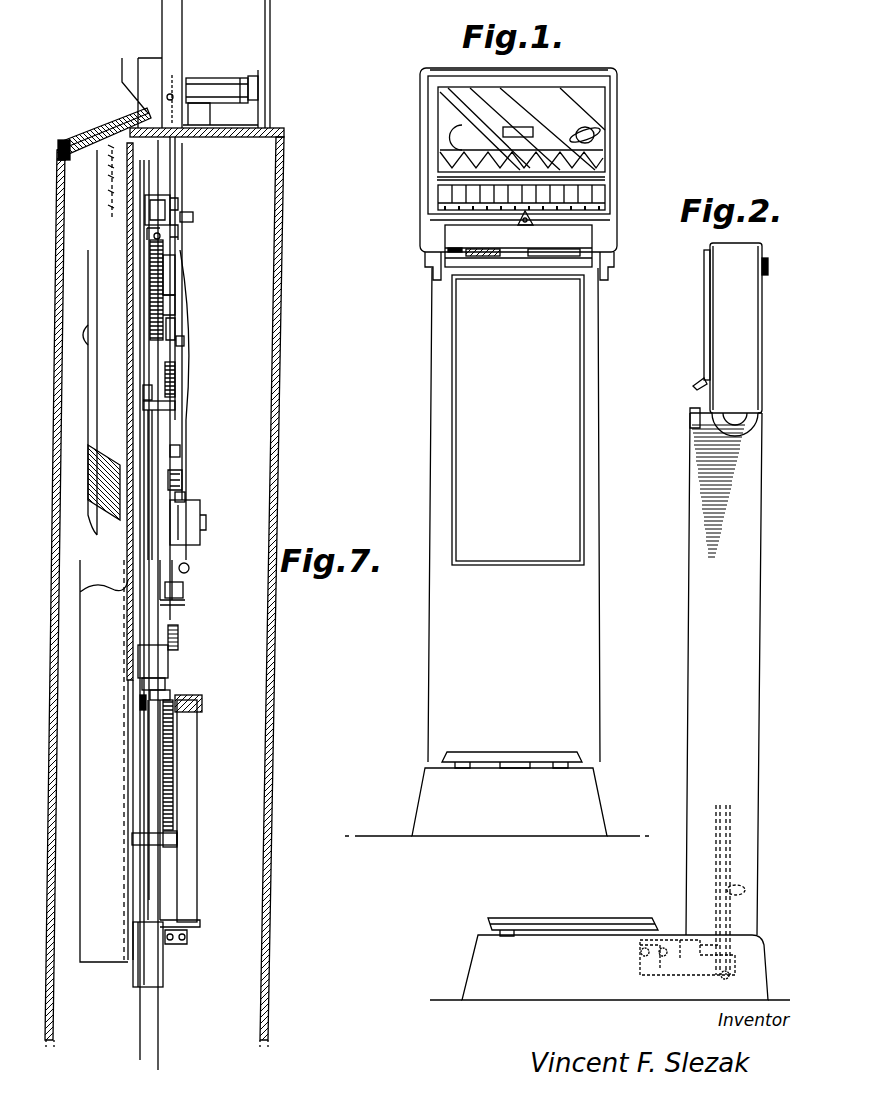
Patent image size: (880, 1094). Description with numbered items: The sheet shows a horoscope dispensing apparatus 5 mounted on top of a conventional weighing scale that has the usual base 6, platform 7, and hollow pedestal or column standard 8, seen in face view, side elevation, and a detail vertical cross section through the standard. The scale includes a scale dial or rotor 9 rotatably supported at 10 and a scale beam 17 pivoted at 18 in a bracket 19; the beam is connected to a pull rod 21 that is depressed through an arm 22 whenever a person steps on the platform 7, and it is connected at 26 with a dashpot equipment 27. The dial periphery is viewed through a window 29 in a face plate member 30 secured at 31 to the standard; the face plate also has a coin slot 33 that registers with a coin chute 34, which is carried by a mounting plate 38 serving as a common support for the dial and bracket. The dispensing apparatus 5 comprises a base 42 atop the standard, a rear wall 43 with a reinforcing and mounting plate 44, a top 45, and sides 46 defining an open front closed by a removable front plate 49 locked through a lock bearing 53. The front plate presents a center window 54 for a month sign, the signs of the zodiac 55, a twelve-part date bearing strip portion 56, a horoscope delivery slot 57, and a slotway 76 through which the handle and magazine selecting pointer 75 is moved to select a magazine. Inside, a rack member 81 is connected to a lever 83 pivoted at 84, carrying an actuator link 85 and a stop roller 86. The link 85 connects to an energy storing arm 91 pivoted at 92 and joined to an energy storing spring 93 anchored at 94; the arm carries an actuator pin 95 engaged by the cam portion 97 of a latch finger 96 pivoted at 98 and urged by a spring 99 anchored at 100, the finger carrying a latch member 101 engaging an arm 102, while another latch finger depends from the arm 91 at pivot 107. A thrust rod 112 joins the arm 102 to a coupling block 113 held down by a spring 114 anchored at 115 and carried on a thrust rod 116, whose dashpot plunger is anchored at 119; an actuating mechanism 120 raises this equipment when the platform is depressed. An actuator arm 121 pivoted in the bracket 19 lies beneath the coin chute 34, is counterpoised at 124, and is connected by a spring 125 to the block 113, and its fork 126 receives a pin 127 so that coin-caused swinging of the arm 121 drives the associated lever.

In FIG. 1, the horoscope dispensing apparatus 5 is at (632, 143).
In FIG. 2, the horoscope dispensing apparatus 5 is at (771, 337).
In FIG. 1, the base 6 is at (497, 802).
In FIG. 2, the base 6 is at (610, 967).
In FIG. 1, the platform 7 is at (542, 760).
In FIG. 2, the platform 7 is at (562, 918).
In FIG. 7, the pedestal or column standard 8 is at (279, 692).
In FIG. 1, the pedestal or column standard 8 is at (606, 489).
In FIG. 2, the pedestal or column standard 8 is at (763, 824).
In FIG. 7, the scale dial or rotor 9 is at (97, 216).
In FIG. 7, the rotatable support 10 is at (84, 338).
In FIG. 7, the scale beam 17 is at (175, 568).
In FIG. 7, the pivot 18 is at (190, 568).
In FIG. 7, the bracket 19 is at (180, 590).
In FIG. 2, the pull rod 21 is at (724, 898).
In FIG. 2, the arm 22 is at (635, 985).
In FIG. 7, the dashpot connection 26 is at (172, 688).
In FIG. 7, the dashpot equipment 27 is at (185, 875).
In FIG. 7, the window 29 is at (93, 116).
In FIG. 1, the window 29 is at (545, 262).
In FIG. 7, the face plate member 30 is at (72, 142).
In FIG. 1, the face plate member 30 is at (468, 264).
In FIG. 2, the face plate member 30 is at (690, 410).
In FIG. 7, the securing means 31 is at (60, 150).
In FIG. 1, the coin slot 33 is at (446, 252).
In FIG. 7, the coin chute 34 is at (178, 150).
In FIG. 7, the mounting plate 38 is at (160, 172).
In FIG. 7, the base 42 is at (262, 126).
In FIG. 7, the rear wall 43 is at (278, 55).
In FIG. 7, the reinforcing and mounting plate 44 is at (276, 23).
In FIG. 1, the top 45 is at (580, 70).
In FIG. 1, the sides 46 is at (617, 112).
In FIG. 2, the sides 46 is at (745, 306).
In FIG. 1, the removable front plate 49 is at (600, 82).
In FIG. 2, the removable front plate 49 is at (704, 323).
In FIG. 2, the lock bearing 53 is at (768, 265).
In FIG. 1, the center window 54 is at (518, 115).
In FIG. 1, the signs of the zodiac 55 is at (600, 155).
In FIG. 1, the date bearing strip portion 56 is at (605, 199).
In FIG. 1, the horoscope delivery slot 57 is at (437, 178).
In FIG. 1, the handle and magazine selecting pointer 75 is at (535, 226).
In FIG. 2, the handle and magazine selecting pointer 75 is at (700, 383).
In FIG. 1, the slotway 76 is at (598, 222).
In FIG. 7, the rack member 81 is at (167, 38).
In FIG. 7, the lever 83 is at (188, 78).
In FIG. 7, the pivot 84 is at (260, 84).
In FIG. 7, the actuator link 85 is at (244, 137).
In FIG. 7, the stop roller 86 is at (200, 98).
In FIG. 7, the energy storing arm 91 is at (163, 238).
In FIG. 7, the pivot 92 is at (158, 200).
In FIG. 7, the energy storing spring 93 is at (165, 268).
In FIG. 7, the spring anchor 94 is at (143, 384).
In FIG. 7, the actuator pin 95 is at (178, 232).
In FIG. 7, the latch finger 96 is at (177, 303).
In FIG. 7, the cam portion 97 is at (175, 200).
In FIG. 7, the pivot 98 is at (185, 342).
In FIG. 7, the spring 99 is at (178, 382).
In FIG. 7, the spring anchor 100 is at (176, 408).
In FIG. 7, the latch member 101 is at (170, 287).
In FIG. 7, the arm 102 is at (172, 322).
In FIG. 7, the pivot 107 is at (192, 217).
In FIG. 7, the thrust rod 112 is at (155, 437).
In FIG. 7, the coupling block 113 is at (160, 670).
In FIG. 7, the spring 114 is at (175, 800).
In FIG. 7, the spring anchor 115 is at (178, 838).
In FIG. 7, the thrust rod 116 is at (155, 762).
In FIG. 2, the thrust rod 116 is at (709, 873).
In FIG. 7, the anchor 119 is at (170, 975).
In FIG. 2, the actuating mechanism 120 is at (686, 968).
In FIG. 7, the actuator arm 121 is at (182, 453).
In FIG. 7, the counterpoise 124 is at (200, 540).
In FIG. 7, the spring 125 is at (178, 637).
In FIG. 7, the fork 126 is at (182, 478).
In FIG. 7, the pin 127 is at (188, 498).